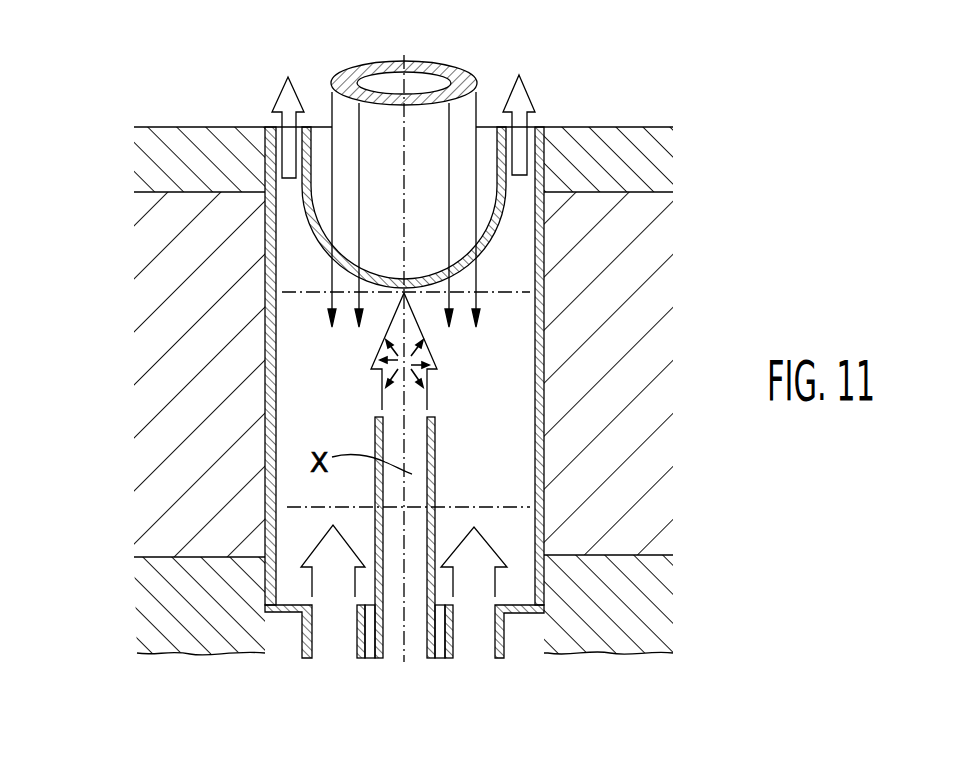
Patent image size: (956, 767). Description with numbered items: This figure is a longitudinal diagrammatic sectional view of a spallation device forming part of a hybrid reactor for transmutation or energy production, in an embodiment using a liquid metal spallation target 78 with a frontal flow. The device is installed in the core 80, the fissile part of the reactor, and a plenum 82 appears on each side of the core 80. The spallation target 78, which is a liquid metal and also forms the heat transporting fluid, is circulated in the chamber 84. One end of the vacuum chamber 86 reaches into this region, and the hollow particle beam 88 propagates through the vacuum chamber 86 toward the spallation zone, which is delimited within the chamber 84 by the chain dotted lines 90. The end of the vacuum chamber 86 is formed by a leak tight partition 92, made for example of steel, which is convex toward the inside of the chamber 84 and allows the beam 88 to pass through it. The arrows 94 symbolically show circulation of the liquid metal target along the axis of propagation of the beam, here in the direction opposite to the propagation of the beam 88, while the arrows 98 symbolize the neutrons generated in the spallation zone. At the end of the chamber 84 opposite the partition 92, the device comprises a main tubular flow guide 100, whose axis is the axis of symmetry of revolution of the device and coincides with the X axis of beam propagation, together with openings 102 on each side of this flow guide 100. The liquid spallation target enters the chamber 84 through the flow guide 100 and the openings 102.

The spallation target 78 is at (498, 380).
The core 80 is at (177, 353).
The plenum 82 is at (157, 148).
The chamber 84 is at (544, 420).
The vacuum chamber 86 is at (514, 209).
The hollow particle beam 88 is at (470, 76).
The chain dotted lines 90 is at (310, 291).
The leak tight partition 92 is at (462, 276).
The arrows 94 is at (285, 102).
The arrows 98 is at (392, 387).
The main tubular flow guide 100 is at (436, 457).
The openings 102 is at (300, 631).